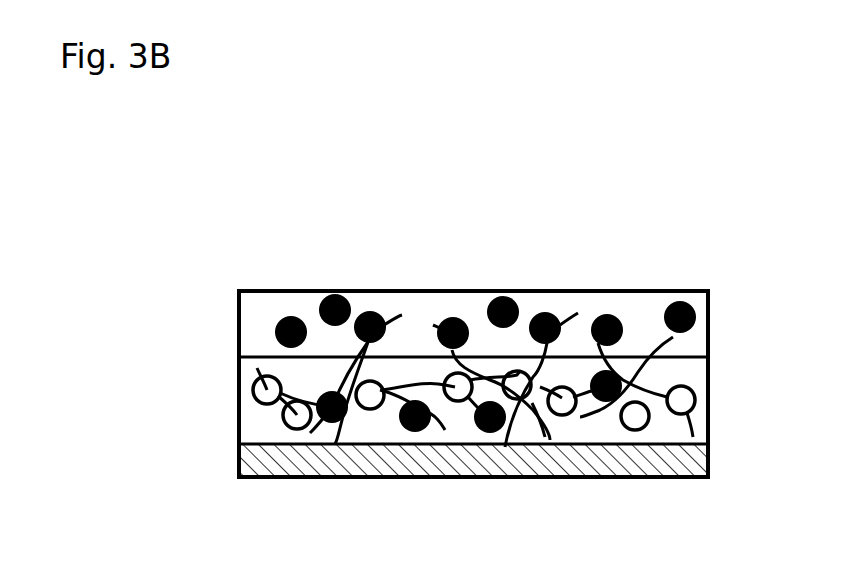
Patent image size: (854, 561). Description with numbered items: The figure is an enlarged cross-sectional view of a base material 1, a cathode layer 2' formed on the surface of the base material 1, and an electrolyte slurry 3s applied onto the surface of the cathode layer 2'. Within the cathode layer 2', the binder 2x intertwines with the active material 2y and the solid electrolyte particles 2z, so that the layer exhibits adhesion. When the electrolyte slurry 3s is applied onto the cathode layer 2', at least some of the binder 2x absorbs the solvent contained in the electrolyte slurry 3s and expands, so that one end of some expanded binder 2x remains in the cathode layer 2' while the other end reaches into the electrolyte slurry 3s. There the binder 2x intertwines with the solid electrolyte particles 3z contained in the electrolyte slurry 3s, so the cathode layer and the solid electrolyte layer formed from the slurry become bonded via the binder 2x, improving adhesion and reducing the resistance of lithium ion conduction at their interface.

The base material 1 is at (710, 457).
The cathode layer 2' is at (515, 384).
The binder 2x is at (335, 444).
The active material 2y is at (295, 429).
The solid electrolyte particles 2z is at (413, 432).
The electrolyte slurry 3s is at (710, 322).
The solid electrolyte particles 3z is at (340, 290).